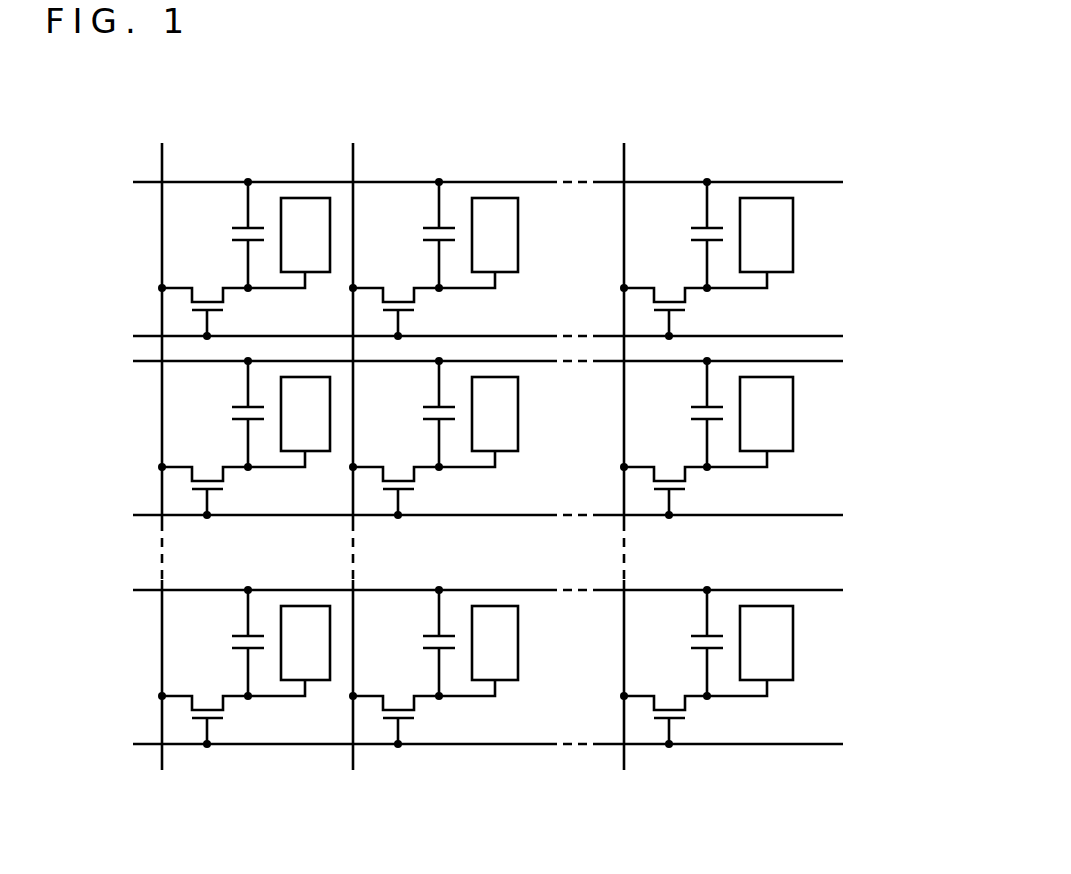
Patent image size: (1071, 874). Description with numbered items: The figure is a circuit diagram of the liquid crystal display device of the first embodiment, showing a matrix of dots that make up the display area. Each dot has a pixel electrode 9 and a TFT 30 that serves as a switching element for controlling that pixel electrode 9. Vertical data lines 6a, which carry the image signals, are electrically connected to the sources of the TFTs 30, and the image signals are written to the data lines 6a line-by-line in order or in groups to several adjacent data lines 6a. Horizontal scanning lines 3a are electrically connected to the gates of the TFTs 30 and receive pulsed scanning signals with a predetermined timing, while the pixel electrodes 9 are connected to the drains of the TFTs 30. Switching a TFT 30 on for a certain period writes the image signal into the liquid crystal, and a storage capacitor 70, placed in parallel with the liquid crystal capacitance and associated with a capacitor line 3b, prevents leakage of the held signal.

The data line 6a is at (162, 163).
The capacitor line 3b is at (793, 182).
The scanning line 3a is at (820, 336).
The storage capacitor 70 is at (228, 238).
The pixel electrode 9 is at (512, 272).
The TFT 30 is at (223, 298).